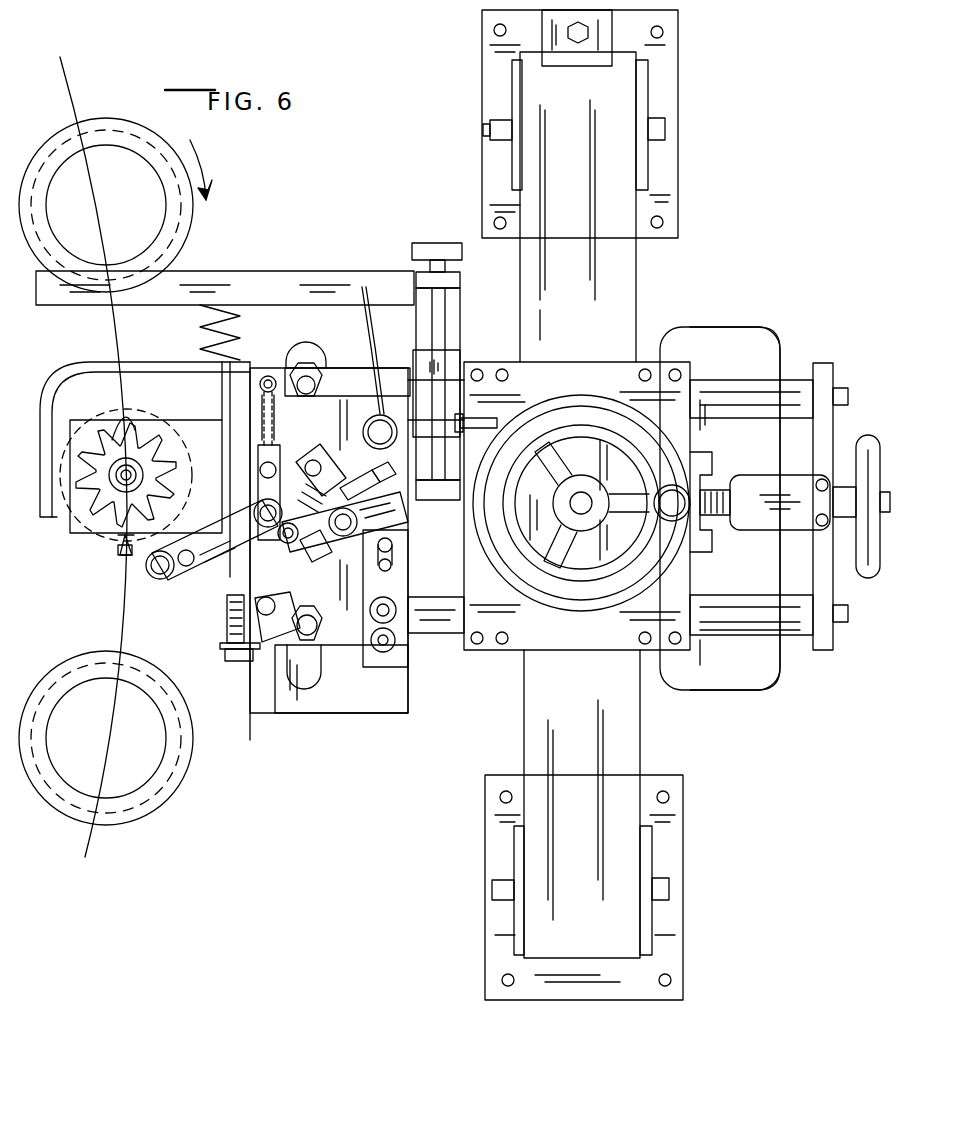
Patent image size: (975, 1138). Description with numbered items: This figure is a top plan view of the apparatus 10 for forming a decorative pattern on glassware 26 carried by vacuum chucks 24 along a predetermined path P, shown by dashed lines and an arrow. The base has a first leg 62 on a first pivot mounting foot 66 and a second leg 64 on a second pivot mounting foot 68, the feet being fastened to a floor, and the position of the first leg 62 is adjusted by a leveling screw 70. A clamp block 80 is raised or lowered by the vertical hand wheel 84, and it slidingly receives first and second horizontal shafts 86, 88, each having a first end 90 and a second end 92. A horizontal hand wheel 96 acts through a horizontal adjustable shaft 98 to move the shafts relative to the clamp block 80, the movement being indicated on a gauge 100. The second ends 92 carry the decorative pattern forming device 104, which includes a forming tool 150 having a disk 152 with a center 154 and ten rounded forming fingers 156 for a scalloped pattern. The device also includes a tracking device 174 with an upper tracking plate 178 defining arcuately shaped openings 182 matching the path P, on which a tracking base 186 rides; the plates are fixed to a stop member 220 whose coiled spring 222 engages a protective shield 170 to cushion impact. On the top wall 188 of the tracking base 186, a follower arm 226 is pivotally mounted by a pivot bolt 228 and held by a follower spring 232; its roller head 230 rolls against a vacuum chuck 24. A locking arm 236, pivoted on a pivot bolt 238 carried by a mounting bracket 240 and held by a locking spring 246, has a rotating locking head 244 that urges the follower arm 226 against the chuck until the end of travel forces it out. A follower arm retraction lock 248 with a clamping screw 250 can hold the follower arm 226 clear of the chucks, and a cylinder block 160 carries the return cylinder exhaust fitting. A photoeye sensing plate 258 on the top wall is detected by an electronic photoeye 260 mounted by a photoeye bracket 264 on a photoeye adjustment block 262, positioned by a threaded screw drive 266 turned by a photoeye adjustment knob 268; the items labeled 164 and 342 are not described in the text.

The apparatus 10 is at (742, 130).
The predetermined path P is at (92, 838).
The vacuum chuck 24 is at (108, 118).
The glassware 26 is at (170, 129).
The first leg 62 is at (620, 262).
The second leg 64 is at (625, 735).
The first pivot mounting foot 66 is at (668, 62).
The second pivot mounting foot 68 is at (672, 888).
The leveling screw 70 is at (568, 38).
The clamp block 80 is at (658, 368).
The vertical hand wheel 84 is at (585, 412).
The first horizontal shaft 86 is at (748, 378).
The second horizontal shaft 88 is at (732, 622).
The first end 90 is at (798, 378).
The second end 92 is at (425, 632).
The horizontal hand wheel 96 is at (868, 432).
The horizontal adjustable shaft 98 is at (738, 484).
The gauge 100 is at (720, 512).
The decorative pattern forming device 104 is at (272, 755).
The forming tool 150 is at (105, 548).
The disk 152 is at (170, 470).
The center 154 is at (140, 455).
The forming fingers 156 is at (127, 400).
The cylinder block 160 is at (160, 580).
The stop pin 164 is at (115, 565).
The protective shield 170 is at (170, 362).
The tracking device 174 is at (390, 718).
The upper tracking plate 178 is at (345, 705).
The arcuately shaped openings 182 is at (305, 345).
The tracking base 186 is at (312, 380).
The top wall 188 is at (262, 640).
The stop member 220 is at (205, 272).
The coiled spring 222 is at (245, 305).
The follower arm 226 is at (215, 540).
The pivot bolt 228 is at (270, 545).
The roller head 230 is at (225, 615).
The follower spring 232 is at (272, 440).
The locking arm 236 is at (405, 515).
The pivot bolt 238 is at (360, 530).
The mounting bracket 240 is at (332, 478).
The rotating locking head 244 is at (318, 560).
The locking spring 246 is at (240, 440).
The follower arm retraction lock 248 is at (318, 676).
The clamping screw 250 is at (238, 662).
The photoeye sensing plate 258 is at (362, 285).
The electronic photoeye 260 is at (440, 422).
The photoeye adjustment block 262 is at (460, 285).
The photoeye bracket 264 is at (442, 362).
The threaded screw drive 266 is at (448, 325).
The photoeye adjustment knob 268 is at (428, 244).
The eye 342 is at (366, 433).